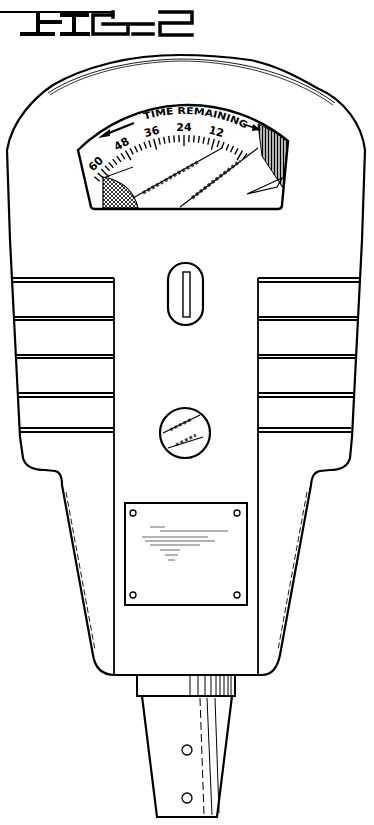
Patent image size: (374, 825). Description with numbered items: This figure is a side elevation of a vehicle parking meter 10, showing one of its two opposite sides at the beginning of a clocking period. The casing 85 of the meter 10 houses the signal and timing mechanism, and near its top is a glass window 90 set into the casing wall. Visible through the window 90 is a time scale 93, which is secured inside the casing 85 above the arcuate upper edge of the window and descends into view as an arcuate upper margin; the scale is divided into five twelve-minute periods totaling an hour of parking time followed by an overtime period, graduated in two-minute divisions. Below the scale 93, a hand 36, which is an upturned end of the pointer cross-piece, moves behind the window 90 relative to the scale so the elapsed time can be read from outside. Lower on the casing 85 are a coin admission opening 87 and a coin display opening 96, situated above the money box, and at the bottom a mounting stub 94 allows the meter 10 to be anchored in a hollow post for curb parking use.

The meter 10 is at (60, 77).
The casing 85 is at (335, 97).
The hand 36 is at (94, 201).
The time scale 93 is at (189, 147).
The window 90 is at (163, 202).
The coin admission opening 87 is at (196, 288).
The coin display opening 96 is at (197, 423).
The mounting stub 94 is at (223, 758).